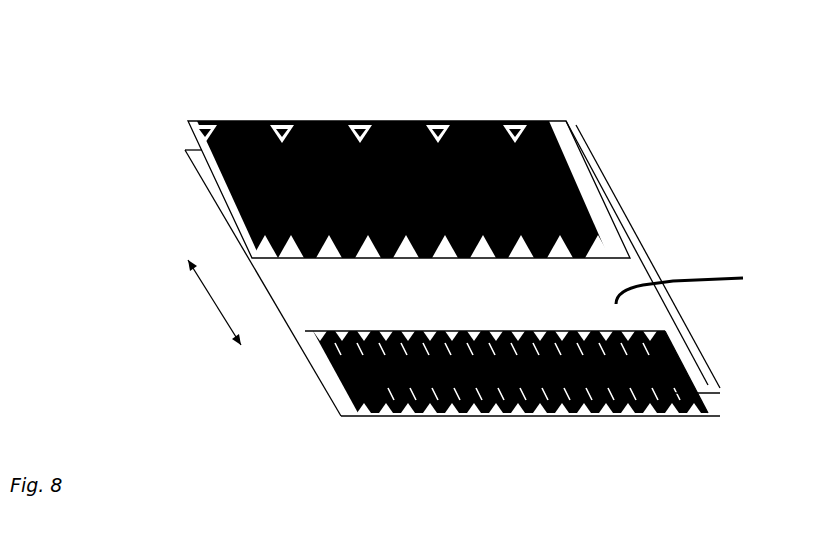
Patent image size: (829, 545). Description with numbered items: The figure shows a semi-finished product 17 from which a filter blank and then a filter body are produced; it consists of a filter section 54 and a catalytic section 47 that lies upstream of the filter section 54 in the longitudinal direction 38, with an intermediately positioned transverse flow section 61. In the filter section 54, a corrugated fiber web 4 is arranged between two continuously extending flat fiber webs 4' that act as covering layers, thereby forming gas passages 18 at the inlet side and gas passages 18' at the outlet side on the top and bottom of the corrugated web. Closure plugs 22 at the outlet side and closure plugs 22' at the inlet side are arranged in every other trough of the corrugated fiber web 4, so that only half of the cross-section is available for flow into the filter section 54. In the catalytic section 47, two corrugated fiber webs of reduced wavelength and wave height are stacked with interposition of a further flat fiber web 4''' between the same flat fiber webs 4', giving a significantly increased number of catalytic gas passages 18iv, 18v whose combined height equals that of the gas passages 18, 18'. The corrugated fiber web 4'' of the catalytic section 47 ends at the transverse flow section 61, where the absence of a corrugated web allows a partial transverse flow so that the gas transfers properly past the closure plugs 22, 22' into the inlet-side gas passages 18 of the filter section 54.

The corrugated fiber web 4 is at (426, 168).
The flat fiber web 4' is at (370, 189).
The corrugated fiber web 4'' is at (518, 357).
The further flat fiber web 4''' is at (567, 403).
The semi-finished product 17 is at (614, 169).
The gas passages at the inlet side 18 is at (431, 269).
The gas passages at the outlet side 18' is at (372, 101).
The gas passages of the catalytic section 18iv is at (353, 410).
The gas passages of the catalytic section 18v is at (360, 410).
The closure plug 22 is at (380, 89).
The closure plug 22' is at (463, 212).
The longitudinal direction 38 is at (203, 292).
The catalytic section 47 is at (296, 378).
The filter section 54 is at (190, 192).
The transverse flow section 61 is at (693, 287).